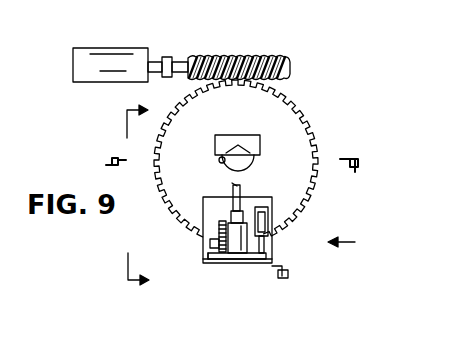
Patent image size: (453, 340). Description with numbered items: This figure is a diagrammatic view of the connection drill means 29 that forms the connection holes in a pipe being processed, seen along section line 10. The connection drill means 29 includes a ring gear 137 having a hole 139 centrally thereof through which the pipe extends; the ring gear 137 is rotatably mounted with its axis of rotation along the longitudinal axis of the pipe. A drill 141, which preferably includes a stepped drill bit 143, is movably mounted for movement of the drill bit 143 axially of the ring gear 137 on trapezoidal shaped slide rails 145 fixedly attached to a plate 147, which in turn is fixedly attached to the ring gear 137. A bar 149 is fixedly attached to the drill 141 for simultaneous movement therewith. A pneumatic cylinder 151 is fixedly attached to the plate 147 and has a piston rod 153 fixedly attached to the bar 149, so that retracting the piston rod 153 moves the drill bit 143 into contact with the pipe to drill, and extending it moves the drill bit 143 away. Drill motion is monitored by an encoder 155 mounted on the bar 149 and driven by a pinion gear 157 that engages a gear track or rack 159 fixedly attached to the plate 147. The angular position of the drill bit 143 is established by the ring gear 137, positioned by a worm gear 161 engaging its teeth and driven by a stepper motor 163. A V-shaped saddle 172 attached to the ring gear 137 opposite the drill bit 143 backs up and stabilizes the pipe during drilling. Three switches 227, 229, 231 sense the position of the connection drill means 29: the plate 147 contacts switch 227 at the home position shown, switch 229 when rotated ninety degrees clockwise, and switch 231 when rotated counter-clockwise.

The section line 10- 10 is at (147, 198).
The connection drill means 29 is at (353, 243).
The ring gear 137 is at (285, 113).
The hole 139 is at (219, 160).
The drill 141 is at (255, 266).
The stepped drill bit 143 is at (232, 184).
The trapezoidal shaped slide rails 145 is at (228, 222).
The plate 147 is at (272, 203).
The bar 149 is at (263, 270).
The pneumatic cylinder 151 is at (274, 198).
The piston rod 153 is at (262, 248).
The encoder 155 is at (213, 256).
The pinion gear 157 is at (220, 267).
The gear track or rack 159 is at (219, 228).
The worm gear 161 is at (231, 53).
The stepper motor 163 is at (84, 56).
The V-shaped saddle 172 is at (257, 142).
The switch 227 is at (288, 277).
The switch 229 is at (106, 165).
The switch 231 is at (355, 172).